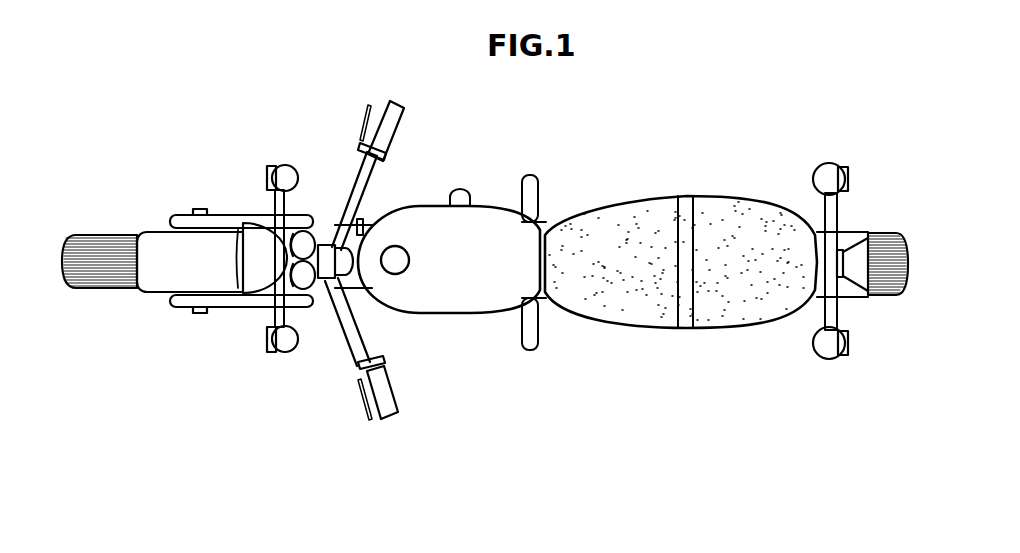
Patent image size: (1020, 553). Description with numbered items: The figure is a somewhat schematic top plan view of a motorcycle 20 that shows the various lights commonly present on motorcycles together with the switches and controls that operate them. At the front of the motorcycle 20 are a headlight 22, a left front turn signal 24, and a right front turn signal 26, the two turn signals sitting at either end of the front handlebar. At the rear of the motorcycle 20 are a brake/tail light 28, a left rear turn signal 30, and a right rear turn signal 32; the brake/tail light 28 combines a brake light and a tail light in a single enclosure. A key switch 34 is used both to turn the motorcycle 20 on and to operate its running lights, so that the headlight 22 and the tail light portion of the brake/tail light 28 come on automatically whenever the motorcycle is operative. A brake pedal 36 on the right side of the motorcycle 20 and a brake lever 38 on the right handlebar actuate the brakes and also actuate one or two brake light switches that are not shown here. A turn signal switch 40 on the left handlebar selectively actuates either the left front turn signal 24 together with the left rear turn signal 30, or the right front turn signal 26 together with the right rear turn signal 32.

The motorcycle 20 is at (178, 191).
The headlight 22 is at (242, 278).
The left front turn signal 24 is at (283, 355).
The right front turn signal 26 is at (283, 165).
The brake/tail light 28 is at (855, 255).
The left rear turn signal 30 is at (833, 358).
The right rear turn signal 32 is at (828, 172).
The key switch 34 is at (368, 218).
The brake pedal 36 is at (472, 197).
The brake lever 38 is at (367, 108).
The turn signal switch 40 is at (372, 357).